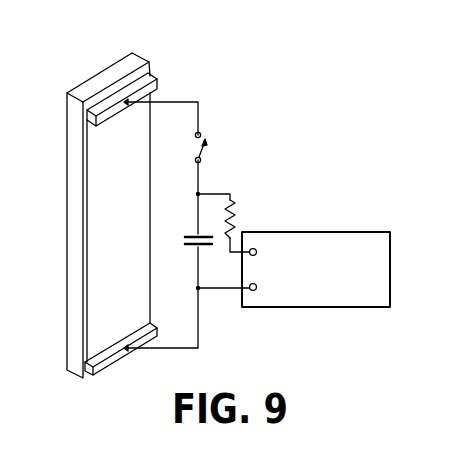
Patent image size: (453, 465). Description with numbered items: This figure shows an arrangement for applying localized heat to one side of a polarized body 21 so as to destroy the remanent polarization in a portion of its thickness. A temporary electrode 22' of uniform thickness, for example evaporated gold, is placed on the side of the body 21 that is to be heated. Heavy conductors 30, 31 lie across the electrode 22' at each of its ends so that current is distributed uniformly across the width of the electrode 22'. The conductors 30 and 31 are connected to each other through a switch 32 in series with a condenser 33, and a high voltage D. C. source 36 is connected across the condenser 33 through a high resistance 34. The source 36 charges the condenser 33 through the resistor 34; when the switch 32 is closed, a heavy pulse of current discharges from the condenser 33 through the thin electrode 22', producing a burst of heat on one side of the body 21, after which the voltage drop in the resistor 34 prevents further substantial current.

The polarized body 21 is at (75, 111).
The temporary electrode 22' is at (61, 241).
The heavy conductor 30 is at (153, 88).
The heavy conductor 31 is at (108, 357).
The switch 32 is at (204, 150).
The condenser 33 is at (190, 248).
The high resistance 34 is at (235, 217).
The high voltage D. C. source 36 is at (315, 230).